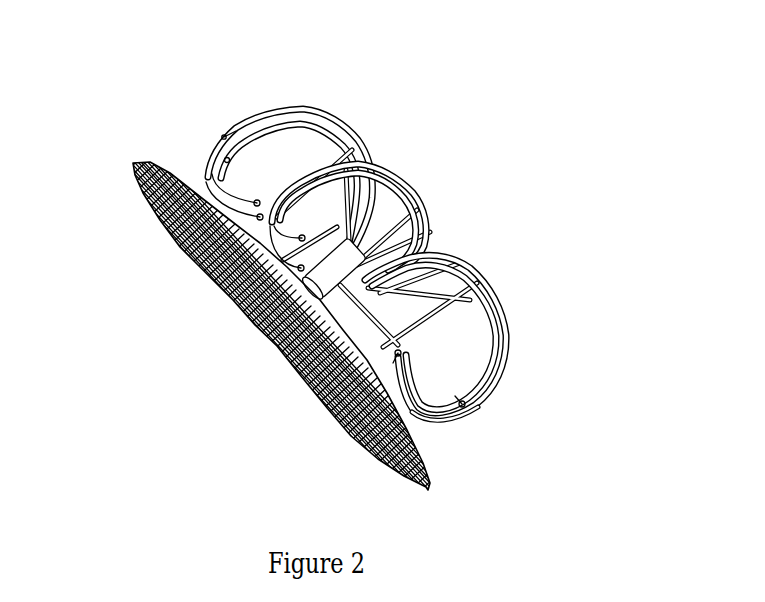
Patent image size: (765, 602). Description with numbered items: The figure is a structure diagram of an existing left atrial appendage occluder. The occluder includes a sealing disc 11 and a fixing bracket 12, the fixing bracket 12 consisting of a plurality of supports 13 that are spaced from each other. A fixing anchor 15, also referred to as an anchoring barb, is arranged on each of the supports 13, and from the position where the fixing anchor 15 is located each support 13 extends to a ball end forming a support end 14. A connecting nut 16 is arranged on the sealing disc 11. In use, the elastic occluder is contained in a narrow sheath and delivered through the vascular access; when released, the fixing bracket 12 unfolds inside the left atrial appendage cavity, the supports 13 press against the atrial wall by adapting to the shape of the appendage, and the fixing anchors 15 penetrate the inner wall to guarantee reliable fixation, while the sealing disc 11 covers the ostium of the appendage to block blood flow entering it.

The sealing disc 11 is at (256, 213).
The fixing bracket 12 is at (250, 134).
The supports 13 is at (500, 336).
The support ends 14 is at (476, 473).
The fixing anchor 15 is at (467, 402).
The connecting nut 16 is at (282, 352).